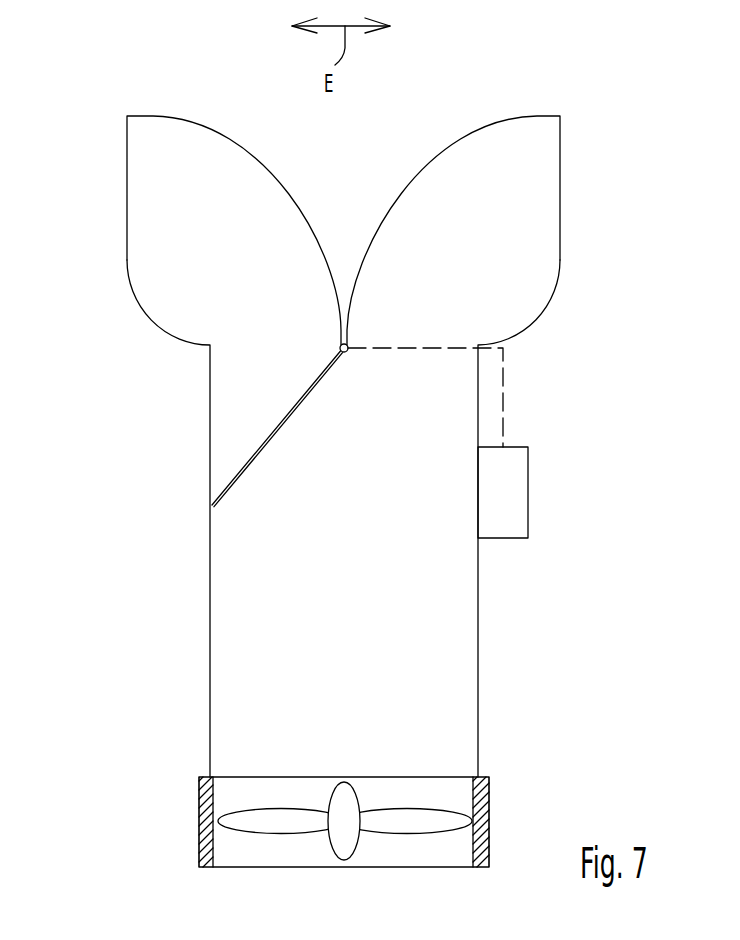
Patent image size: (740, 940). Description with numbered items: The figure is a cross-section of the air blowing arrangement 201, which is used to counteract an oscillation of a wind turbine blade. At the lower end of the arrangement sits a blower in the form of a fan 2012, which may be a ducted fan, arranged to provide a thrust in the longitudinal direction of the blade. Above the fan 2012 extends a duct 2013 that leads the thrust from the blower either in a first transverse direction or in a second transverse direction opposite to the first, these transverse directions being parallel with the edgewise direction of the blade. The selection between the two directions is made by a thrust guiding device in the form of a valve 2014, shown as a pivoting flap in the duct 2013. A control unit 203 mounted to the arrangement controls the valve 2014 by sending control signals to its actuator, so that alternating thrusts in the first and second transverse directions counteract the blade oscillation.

The air blowing arrangement 201 is at (178, 740).
The fan 2012 is at (350, 852).
The duct 2013 is at (210, 618).
The valve 2014 is at (263, 440).
The control unit 203 is at (510, 538).